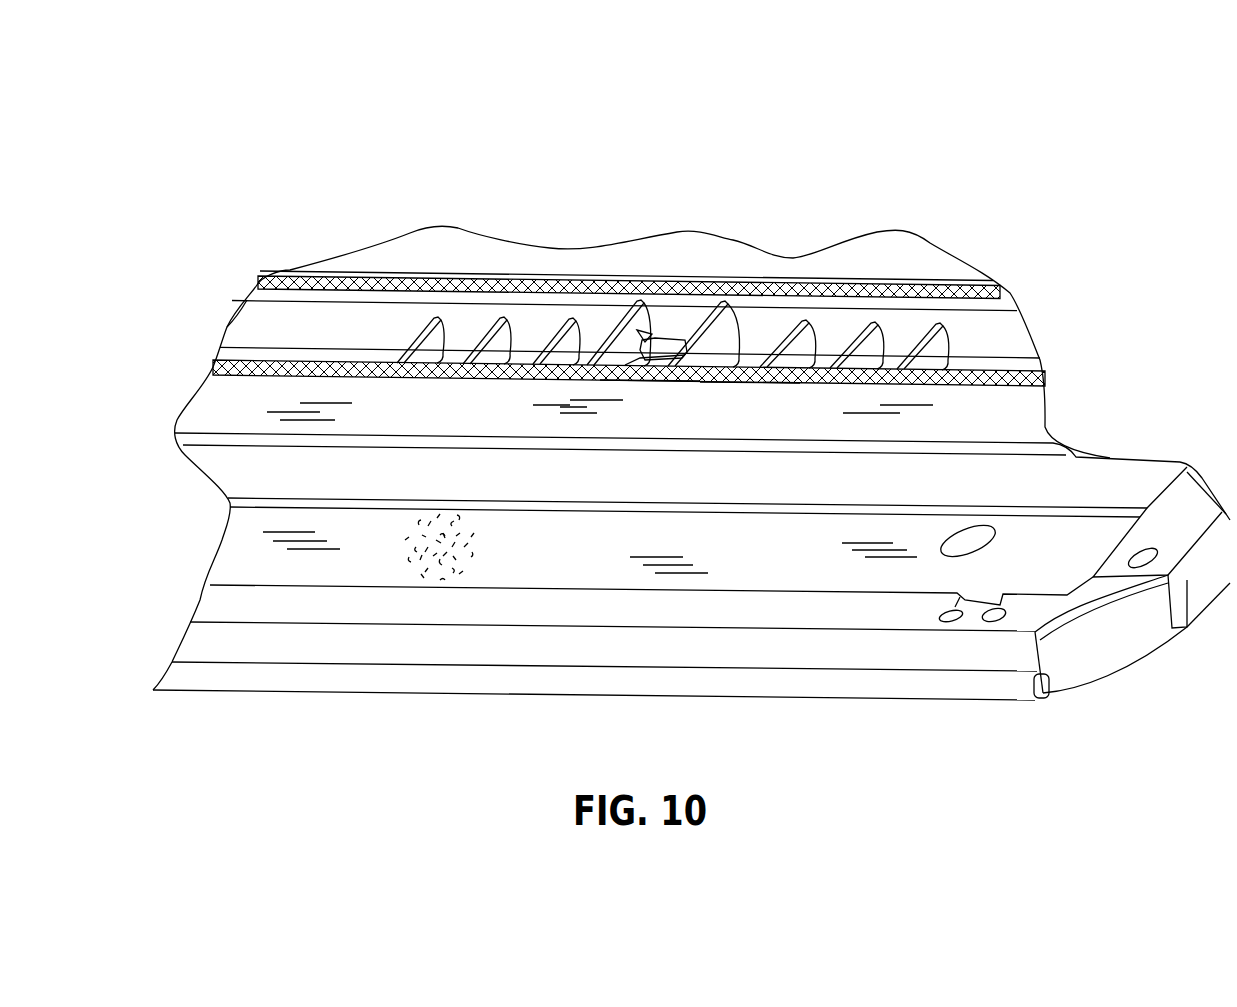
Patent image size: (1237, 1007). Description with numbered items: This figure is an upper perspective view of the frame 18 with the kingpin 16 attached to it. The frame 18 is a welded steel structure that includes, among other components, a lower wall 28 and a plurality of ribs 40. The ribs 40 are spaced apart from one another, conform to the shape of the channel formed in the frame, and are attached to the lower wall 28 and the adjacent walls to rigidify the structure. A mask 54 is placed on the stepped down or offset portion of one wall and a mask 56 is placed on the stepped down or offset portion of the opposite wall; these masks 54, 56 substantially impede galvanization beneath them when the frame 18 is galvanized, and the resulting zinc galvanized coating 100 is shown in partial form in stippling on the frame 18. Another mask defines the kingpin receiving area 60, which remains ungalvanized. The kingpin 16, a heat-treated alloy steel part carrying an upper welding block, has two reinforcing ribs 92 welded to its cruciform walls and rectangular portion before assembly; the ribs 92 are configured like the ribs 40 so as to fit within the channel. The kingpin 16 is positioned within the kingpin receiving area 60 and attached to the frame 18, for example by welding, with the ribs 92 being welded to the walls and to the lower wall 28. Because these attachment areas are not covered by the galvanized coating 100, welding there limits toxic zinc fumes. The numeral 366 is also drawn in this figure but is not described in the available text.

The frame 18 is at (968, 187).
The side body portion 366 is at (242, 320).
The mask 56 is at (1000, 291).
The mask 54 is at (1040, 378).
The ribs 40 is at (556, 330).
The reinforcing ribs 92 is at (622, 338).
The kingpin receiving area 60 is at (671, 318).
The kingpin 16 is at (650, 384).
The lower wall 28 is at (741, 386).
The galvanized coating 100 is at (437, 567).